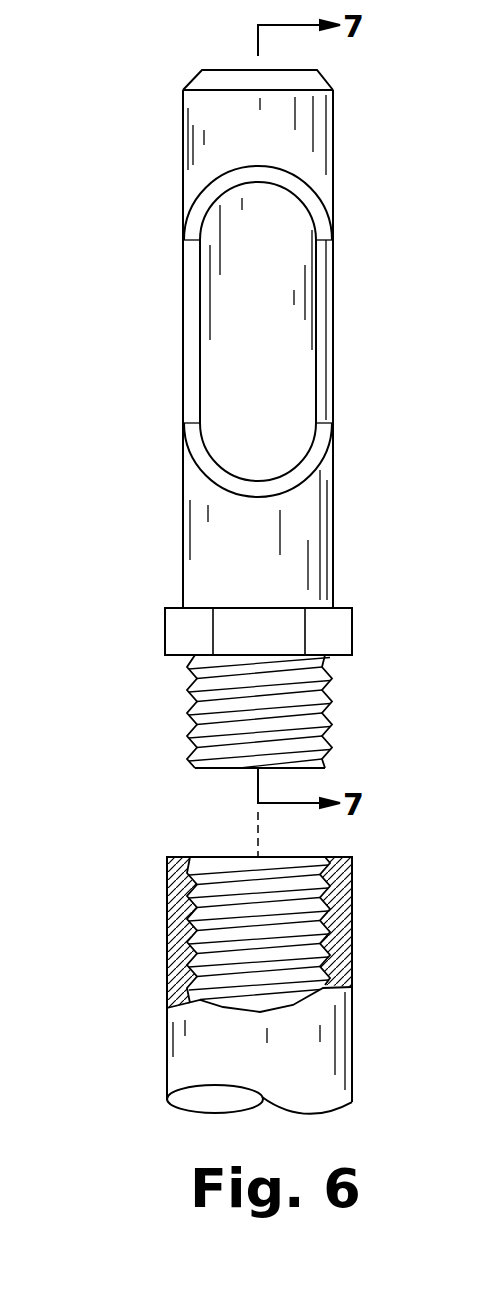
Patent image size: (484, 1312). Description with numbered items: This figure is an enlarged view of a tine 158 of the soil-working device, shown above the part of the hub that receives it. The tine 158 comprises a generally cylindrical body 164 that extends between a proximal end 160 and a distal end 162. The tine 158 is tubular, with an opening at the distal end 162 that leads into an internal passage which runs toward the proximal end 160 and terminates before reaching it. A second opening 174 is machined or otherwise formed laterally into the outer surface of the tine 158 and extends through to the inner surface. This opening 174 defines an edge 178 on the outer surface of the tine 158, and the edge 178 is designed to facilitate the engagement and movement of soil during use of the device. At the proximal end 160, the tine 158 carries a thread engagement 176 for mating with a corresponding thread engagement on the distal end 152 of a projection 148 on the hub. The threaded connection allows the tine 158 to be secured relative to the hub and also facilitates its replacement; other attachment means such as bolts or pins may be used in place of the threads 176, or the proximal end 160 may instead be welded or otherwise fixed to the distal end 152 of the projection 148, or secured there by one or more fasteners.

The projection 148 is at (352, 923).
The distal end of the projection 152 is at (150, 894).
The tine 158 is at (147, 397).
The proximal end 160 is at (158, 753).
The distal end 162 is at (162, 74).
The cylindrical body 164 is at (183, 312).
The second opening 174 is at (288, 381).
The thread engagement 176 is at (190, 697).
The edge 178 is at (198, 266).